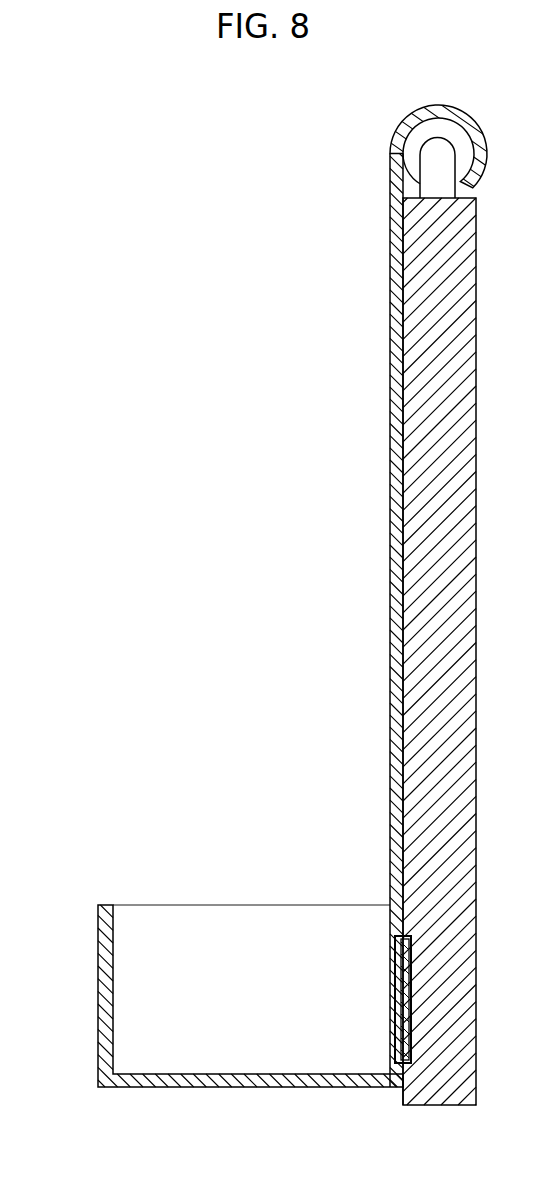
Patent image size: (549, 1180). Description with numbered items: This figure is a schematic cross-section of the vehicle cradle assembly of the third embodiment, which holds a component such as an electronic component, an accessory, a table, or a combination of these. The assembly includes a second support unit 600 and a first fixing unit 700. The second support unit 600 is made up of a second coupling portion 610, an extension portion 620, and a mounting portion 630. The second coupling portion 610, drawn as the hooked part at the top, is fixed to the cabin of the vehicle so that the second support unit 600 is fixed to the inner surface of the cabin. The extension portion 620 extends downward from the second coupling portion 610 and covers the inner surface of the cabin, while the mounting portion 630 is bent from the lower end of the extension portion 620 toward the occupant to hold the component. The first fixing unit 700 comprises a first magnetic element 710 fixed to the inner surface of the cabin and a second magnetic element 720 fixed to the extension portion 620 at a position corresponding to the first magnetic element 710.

The second support unit 600 is at (261, 552).
The second coupling portion 610 is at (398, 125).
The extension portion 620 is at (391, 385).
The mounting portion 630 is at (191, 905).
The first fixing unit 700 is at (344, 832).
The first magnetic element 710 is at (405, 936).
The second magnetic element 720 is at (395, 995).